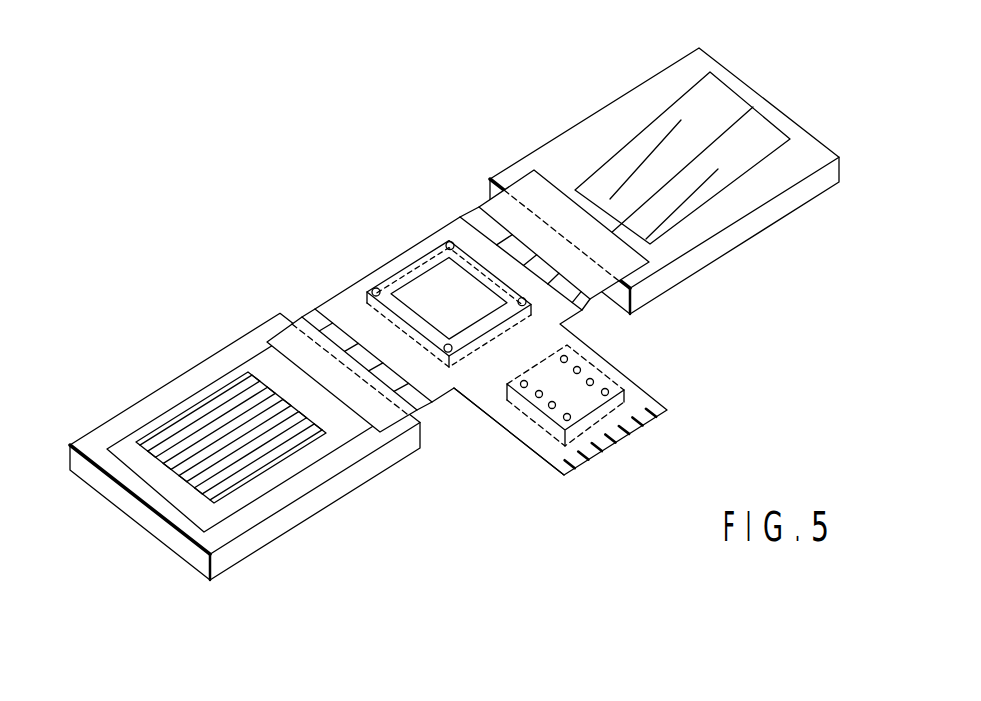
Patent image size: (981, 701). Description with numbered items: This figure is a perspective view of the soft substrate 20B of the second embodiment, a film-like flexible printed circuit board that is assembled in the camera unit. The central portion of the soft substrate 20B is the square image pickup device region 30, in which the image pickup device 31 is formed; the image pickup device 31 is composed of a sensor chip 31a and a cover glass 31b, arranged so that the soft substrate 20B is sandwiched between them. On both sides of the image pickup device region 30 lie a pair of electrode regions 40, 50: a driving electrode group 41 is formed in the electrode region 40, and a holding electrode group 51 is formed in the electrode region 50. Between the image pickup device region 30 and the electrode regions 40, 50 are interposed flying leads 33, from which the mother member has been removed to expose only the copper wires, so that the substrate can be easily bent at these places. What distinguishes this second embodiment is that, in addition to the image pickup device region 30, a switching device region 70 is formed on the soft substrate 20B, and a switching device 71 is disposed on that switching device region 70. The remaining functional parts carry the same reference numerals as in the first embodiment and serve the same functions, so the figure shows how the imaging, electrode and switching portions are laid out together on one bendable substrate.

The soft substrate 20B is at (474, 422).
The image pickup device region 30 is at (314, 296).
The image pickup device 31 is at (359, 287).
The sensor chip 31a is at (380, 278).
The cover glass 31b is at (441, 245).
The flying leads 33 is at (484, 234).
The electrode region 40 is at (266, 541).
The driving electrode group 41 is at (233, 354).
The electrode region 50 is at (741, 229).
The holding electrode group 51 is at (663, 220).
The switching device region 70 is at (513, 423).
The switching device 71 is at (602, 373).